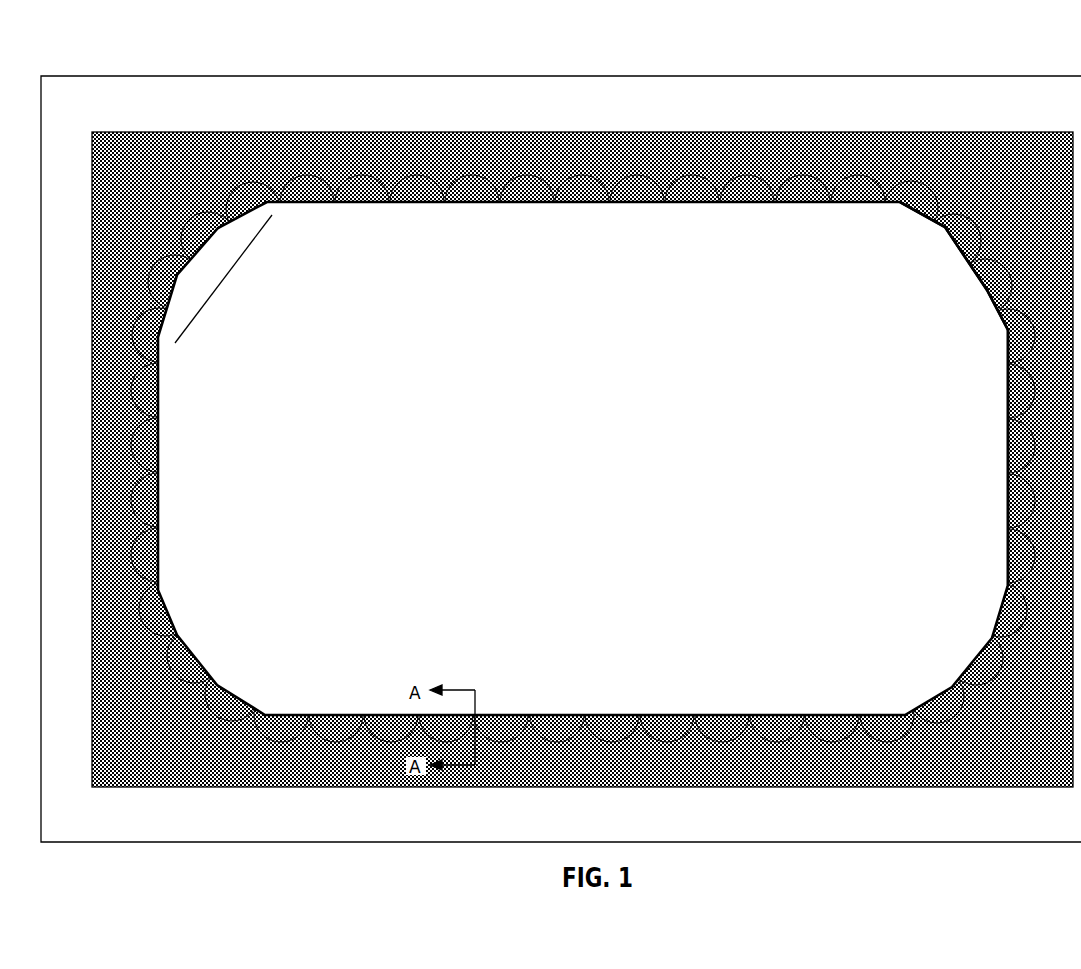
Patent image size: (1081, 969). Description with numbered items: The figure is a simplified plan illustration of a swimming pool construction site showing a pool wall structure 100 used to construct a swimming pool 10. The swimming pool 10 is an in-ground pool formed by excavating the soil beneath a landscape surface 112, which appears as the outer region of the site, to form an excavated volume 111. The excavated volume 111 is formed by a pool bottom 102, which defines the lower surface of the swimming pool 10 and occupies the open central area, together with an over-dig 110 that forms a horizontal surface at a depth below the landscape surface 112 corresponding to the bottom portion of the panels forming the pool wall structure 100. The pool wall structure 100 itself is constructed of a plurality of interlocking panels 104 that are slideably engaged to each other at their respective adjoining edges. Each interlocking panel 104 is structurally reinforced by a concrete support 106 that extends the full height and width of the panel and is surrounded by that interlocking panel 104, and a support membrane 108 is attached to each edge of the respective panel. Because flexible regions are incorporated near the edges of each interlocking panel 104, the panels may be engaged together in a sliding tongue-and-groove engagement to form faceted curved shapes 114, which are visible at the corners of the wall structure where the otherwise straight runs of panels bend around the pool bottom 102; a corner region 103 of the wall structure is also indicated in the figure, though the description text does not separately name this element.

The swimming pool 10 is at (533, 67).
The pool wall structure 100 is at (525, 216).
The pool bottom 102 is at (582, 494).
The chamfered corner of die 103 is at (905, 247).
The interlocking panel 104 is at (1007, 420).
The concrete support 106 is at (817, 192).
The support membrane 108 is at (795, 180).
The over-dig 110 is at (174, 194).
The excavated volume 111 is at (253, 99).
The landscape surface 112 is at (100, 114).
The faceted curved shape 114 is at (232, 272).